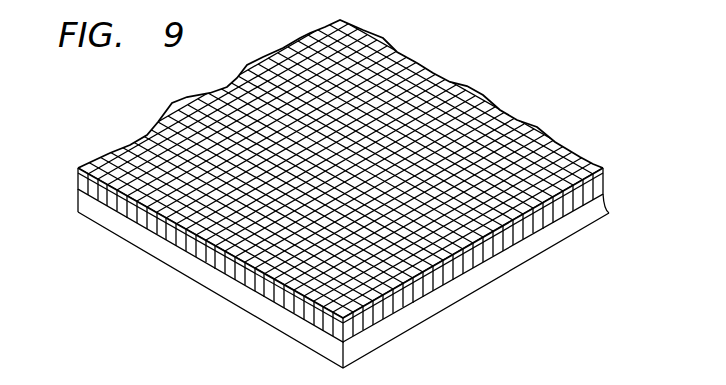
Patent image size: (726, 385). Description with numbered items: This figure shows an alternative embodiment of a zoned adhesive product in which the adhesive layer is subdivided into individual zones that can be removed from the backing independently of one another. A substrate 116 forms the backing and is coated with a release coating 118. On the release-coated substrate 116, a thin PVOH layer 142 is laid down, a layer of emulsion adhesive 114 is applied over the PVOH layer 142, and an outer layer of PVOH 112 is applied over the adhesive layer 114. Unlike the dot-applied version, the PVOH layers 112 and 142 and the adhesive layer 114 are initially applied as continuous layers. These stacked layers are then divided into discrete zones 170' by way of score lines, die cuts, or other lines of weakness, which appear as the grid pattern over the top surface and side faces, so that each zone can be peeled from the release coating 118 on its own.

The outer layer of PVOH 112 is at (607, 170).
The emulsion adhesive layer 114 is at (605, 184).
The substrate 116 is at (525, 250).
The release coating 118 is at (78, 190).
The PVOH layer 142 is at (378, 320).
The discrete zones 170' is at (210, 272).